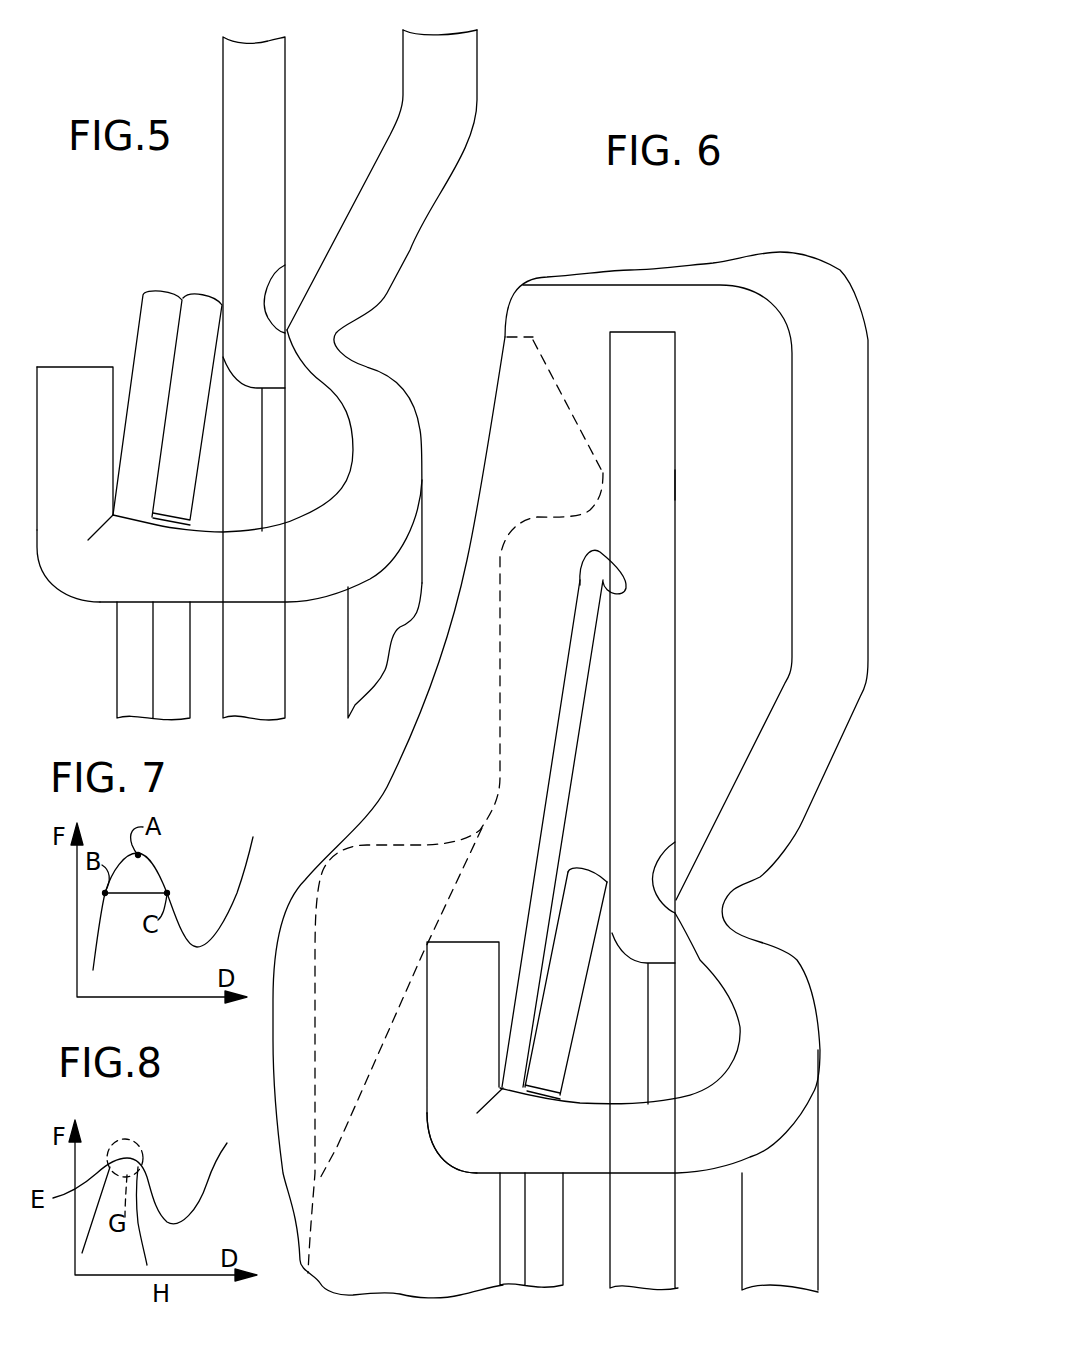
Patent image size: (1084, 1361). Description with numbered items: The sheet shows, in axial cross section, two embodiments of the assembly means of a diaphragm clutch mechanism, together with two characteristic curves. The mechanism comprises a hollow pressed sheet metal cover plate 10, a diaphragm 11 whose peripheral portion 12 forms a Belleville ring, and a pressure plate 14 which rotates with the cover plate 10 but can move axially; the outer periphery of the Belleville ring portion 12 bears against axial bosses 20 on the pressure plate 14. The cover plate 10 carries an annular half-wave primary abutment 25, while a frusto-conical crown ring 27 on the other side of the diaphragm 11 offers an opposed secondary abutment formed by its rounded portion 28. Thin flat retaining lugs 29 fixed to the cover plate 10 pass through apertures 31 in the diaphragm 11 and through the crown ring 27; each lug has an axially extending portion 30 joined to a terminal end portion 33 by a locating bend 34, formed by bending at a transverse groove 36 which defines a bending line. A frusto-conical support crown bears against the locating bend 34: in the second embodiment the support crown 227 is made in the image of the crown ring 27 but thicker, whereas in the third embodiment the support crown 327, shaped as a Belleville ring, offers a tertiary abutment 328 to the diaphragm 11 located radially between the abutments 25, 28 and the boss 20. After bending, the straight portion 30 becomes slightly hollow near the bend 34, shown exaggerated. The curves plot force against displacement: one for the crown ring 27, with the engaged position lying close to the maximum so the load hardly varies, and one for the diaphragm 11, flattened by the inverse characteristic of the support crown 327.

In FIG. 5, the cover plate 10 is at (433, 217).
In FIG. 6, the cover plate 10 is at (783, 503).
In FIG. 5, the diaphragm 11 is at (293, 93).
In FIG. 6, the diaphragm 11 is at (647, 318).
In FIG. 6, the peripheral portion 12 is at (663, 487).
In FIG. 6, the pressure plate 14 is at (530, 407).
In FIG. 6, the axial boss 20 is at (603, 473).
In FIG. 5, the primary abutment 25 is at (305, 263).
In FIG. 6, the primary abutment 25 is at (675, 842).
In FIG. 5, the crown ring 27 is at (206, 292).
In FIG. 6, the crown ring 27 is at (588, 858).
In FIG. 6, the rounded portion 28 is at (606, 888).
In FIG. 5, the retaining lug 29 is at (275, 608).
In FIG. 6, the retaining lug 29 is at (489, 1180).
In FIG. 6, the axially extending portion 30 is at (650, 1150).
In FIG. 5, the aperture 31 is at (268, 389).
In FIG. 6, the aperture 31 is at (663, 967).
In FIG. 5, the terminal end portion 33 is at (72, 367).
In FIG. 6, the terminal end portion 33 is at (427, 1047).
In FIG. 5, the locating bend 34 is at (55, 578).
In FIG. 6, the locating bend 34 is at (453, 1147).
In FIG. 5, the transverse groove 36 is at (88, 540).
In FIG. 5, the support crown 227 is at (132, 344).
In FIG. 6, the support crown 327 is at (550, 697).
In FIG. 6, the tertiary abutment 328 is at (583, 573).